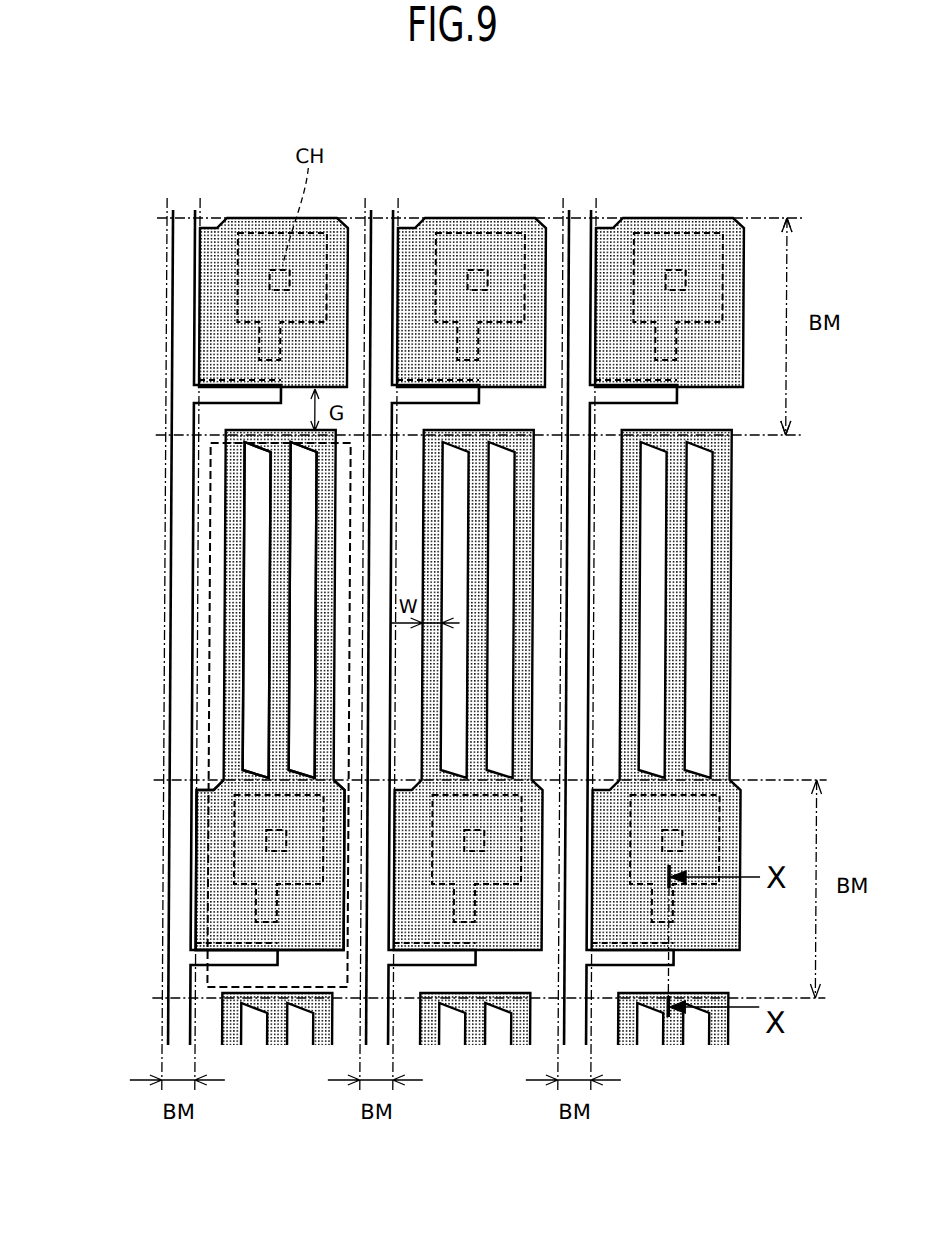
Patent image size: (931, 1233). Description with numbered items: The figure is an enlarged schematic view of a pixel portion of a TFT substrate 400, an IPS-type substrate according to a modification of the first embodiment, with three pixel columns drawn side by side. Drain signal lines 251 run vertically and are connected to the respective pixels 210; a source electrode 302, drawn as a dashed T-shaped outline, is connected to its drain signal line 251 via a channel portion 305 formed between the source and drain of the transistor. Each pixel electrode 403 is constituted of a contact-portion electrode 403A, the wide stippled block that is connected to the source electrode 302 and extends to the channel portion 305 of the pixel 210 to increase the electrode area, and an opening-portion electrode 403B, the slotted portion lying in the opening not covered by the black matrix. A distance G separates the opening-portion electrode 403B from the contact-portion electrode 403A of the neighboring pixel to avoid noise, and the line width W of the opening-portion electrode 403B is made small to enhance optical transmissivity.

The TFT substrate 400 is at (479, 143).
The drain signal line 251 is at (183, 293).
The pixel electrode 403 is at (223, 610).
The contact-portion electrode 403A is at (222, 848).
The opening-portion electrode 403B is at (237, 535).
The pixel 210 is at (212, 663).
The source electrode 302 is at (240, 900).
The channel portion 305 is at (252, 939).